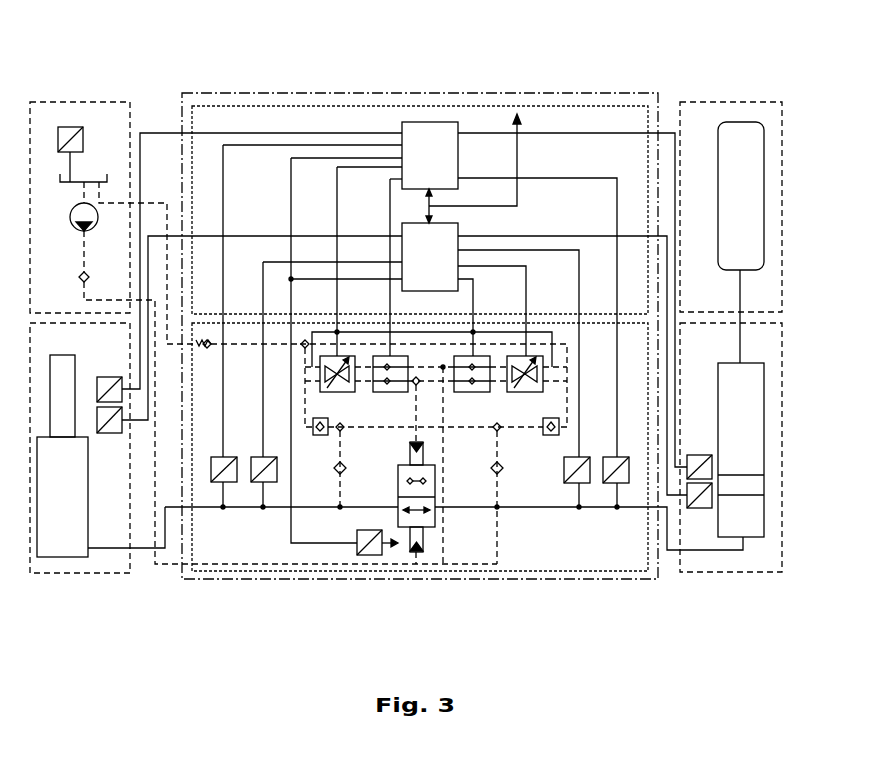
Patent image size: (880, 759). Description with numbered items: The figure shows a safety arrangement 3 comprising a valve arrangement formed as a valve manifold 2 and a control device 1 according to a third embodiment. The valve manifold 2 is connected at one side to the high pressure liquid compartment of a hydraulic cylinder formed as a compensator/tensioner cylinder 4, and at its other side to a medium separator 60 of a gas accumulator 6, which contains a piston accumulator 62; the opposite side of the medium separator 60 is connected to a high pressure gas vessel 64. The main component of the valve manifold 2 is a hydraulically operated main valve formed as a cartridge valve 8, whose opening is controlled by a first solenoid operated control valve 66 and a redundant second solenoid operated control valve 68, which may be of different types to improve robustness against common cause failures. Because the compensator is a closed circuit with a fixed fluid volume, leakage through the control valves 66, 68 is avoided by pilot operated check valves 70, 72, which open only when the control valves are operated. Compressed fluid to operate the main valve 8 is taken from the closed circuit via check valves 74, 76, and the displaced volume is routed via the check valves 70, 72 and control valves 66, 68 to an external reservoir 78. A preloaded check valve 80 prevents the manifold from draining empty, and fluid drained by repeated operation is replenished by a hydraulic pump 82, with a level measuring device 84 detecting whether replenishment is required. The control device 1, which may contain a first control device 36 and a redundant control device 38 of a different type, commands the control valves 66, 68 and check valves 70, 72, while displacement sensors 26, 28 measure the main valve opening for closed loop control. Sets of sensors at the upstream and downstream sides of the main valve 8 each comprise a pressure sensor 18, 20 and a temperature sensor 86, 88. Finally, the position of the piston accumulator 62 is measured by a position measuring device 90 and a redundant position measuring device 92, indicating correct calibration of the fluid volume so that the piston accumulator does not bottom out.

The control device 1 is at (243, 105).
The valve manifold 2 is at (495, 578).
The safety arrangement 3 is at (404, 93).
The compensator/tensioner cylinder 4 is at (62, 557).
The gas accumulator 6 is at (790, 316).
The cartridge valve 8 is at (401, 555).
The pressure sensor 18 is at (214, 457).
The pressure sensor 20 is at (578, 457).
The displacement sensor 26 is at (97, 385).
The displacement sensor 28 is at (100, 433).
The first control device 36 is at (455, 290).
The redundant control device 38 is at (475, 342).
The medium separator 60 is at (746, 497).
The piston accumulator 62 is at (720, 363).
The high pressure gas vessel 64 is at (740, 122).
The first solenoid operated control valve 66 is at (338, 392).
The second solenoid operated control valve 68 is at (520, 392).
The pilot operated check valve 70 is at (380, 392).
The pilot operated check valve 72 is at (462, 392).
The check valve 74 is at (346, 468).
The check valve 76 is at (503, 468).
The external reservoir 78 is at (90, 182).
The preloaded check valve 80 is at (200, 350).
The hydraulic pump 82 is at (96, 222).
The level measuring device 84 is at (72, 127).
The temperature sensor 86 is at (254, 457).
The temperature sensor 88 is at (620, 457).
The position measuring device 90 is at (700, 455).
The redundant position measuring device 92 is at (692, 508).